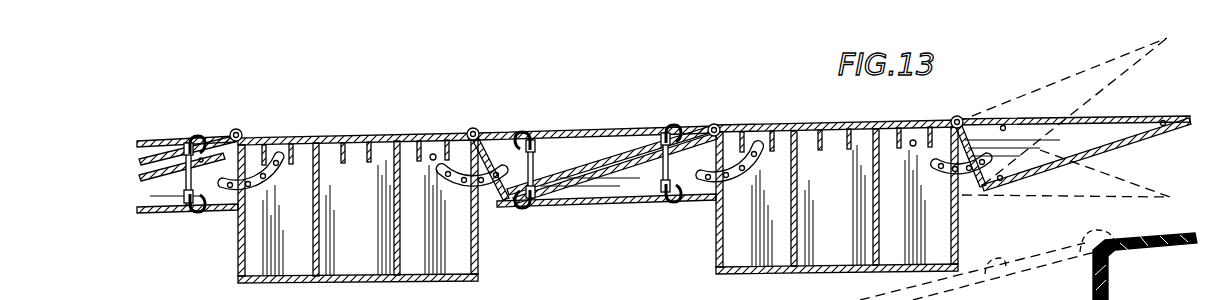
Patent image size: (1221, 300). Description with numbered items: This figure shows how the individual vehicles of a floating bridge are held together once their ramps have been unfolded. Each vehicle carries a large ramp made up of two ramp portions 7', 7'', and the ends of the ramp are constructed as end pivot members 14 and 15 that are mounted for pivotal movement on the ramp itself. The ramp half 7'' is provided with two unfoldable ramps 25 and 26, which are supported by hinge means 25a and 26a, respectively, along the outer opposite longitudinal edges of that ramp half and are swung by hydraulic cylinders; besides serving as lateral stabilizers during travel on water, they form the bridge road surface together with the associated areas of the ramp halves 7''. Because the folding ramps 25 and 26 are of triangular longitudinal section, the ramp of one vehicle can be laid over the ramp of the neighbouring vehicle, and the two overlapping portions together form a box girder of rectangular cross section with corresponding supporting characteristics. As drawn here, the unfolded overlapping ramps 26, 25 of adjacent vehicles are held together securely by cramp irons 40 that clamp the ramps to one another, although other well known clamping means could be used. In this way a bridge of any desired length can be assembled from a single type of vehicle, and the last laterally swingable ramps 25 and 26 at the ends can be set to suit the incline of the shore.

The ramp portion 7'' is at (598, 201).
The ramp portion 7' is at (1014, 265).
The end pivot member 14 is at (1124, 266).
The end pivot member 15 is at (902, 271).
The unfoldable ramp 25 is at (165, 193).
The hinge means 25a is at (241, 133).
The unfoldable ramp 26 is at (157, 152).
The hinge means 26a is at (474, 128).
The cramp iron 40 is at (200, 143).